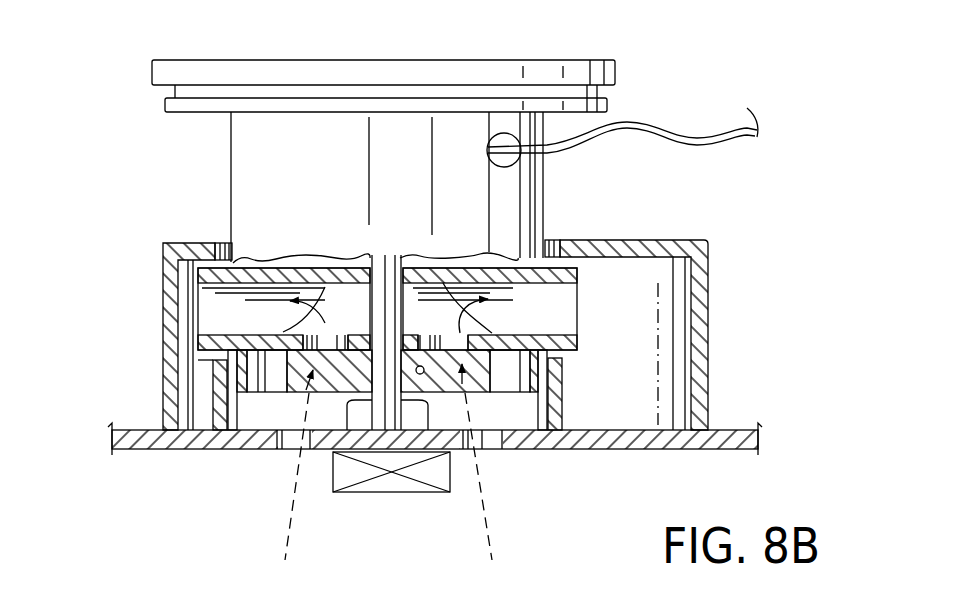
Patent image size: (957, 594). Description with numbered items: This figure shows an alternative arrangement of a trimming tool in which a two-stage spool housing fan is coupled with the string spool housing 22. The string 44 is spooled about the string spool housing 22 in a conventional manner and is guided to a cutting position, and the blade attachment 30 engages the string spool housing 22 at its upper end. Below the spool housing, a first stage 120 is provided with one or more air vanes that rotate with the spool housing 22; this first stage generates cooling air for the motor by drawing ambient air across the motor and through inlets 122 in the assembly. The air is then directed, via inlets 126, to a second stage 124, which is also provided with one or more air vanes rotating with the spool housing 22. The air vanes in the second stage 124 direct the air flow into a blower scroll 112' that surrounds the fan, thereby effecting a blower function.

The blade attachment 30 is at (560, 62).
The string spool housing 22 is at (263, 190).
The string 44 is at (655, 122).
The blower scroll 112' is at (373, 335).
The second stage 124 is at (222, 313).
The inlets 126 is at (337, 335).
The first stage 120 is at (258, 393).
The inlets 122 is at (282, 450).